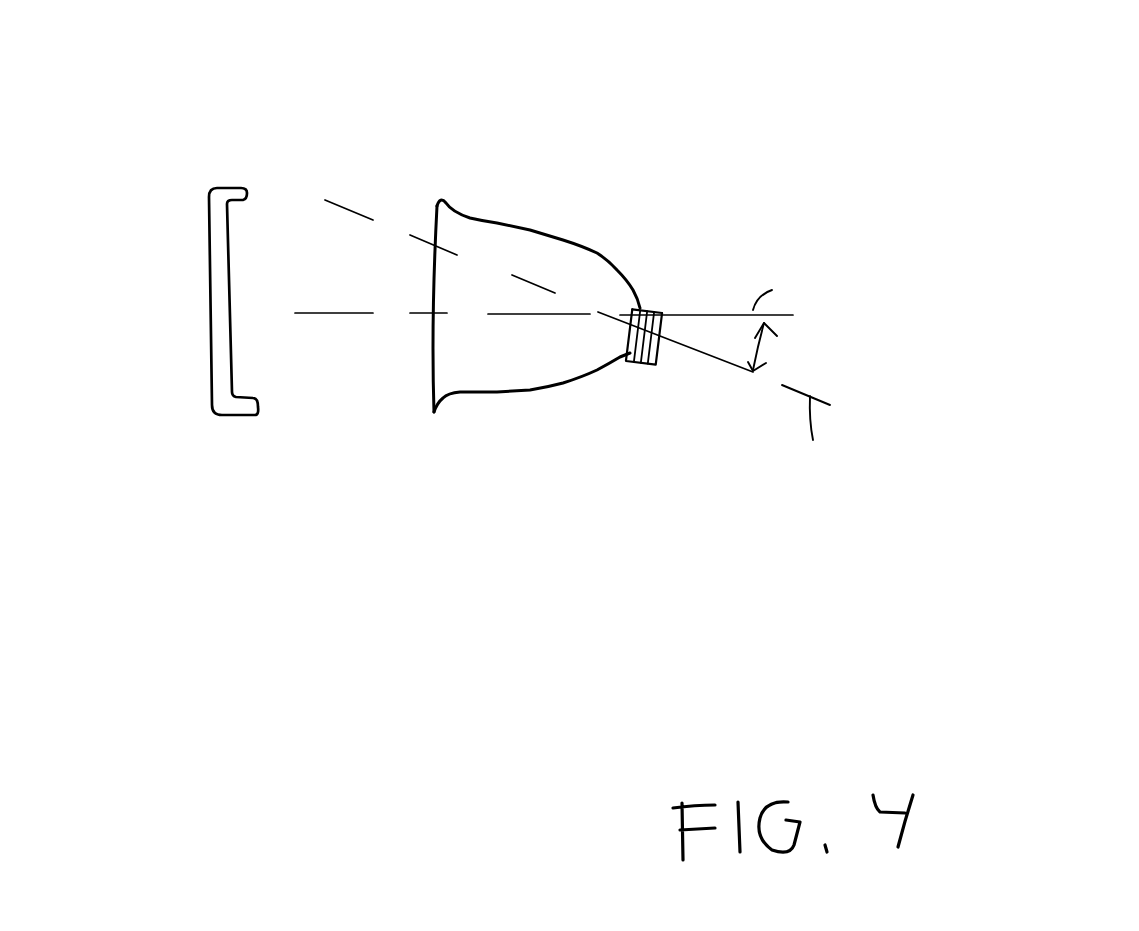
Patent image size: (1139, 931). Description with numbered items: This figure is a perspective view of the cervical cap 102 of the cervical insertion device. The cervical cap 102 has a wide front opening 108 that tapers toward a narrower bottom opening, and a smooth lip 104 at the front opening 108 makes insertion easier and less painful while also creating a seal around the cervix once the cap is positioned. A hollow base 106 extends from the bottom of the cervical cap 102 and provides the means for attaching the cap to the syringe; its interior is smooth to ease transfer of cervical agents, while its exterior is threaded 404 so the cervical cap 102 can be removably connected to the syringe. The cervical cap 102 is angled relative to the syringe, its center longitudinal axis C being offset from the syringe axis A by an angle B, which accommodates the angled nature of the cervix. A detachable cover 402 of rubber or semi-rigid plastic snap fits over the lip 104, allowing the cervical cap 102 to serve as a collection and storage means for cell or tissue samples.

The cervical cap 102 is at (1115, 195).
The lip 104 is at (450, 207).
The base 106 is at (647, 368).
The front opening 108 is at (433, 288).
The cover 402 is at (207, 195).
The threaded exterior surface 404 is at (650, 310).